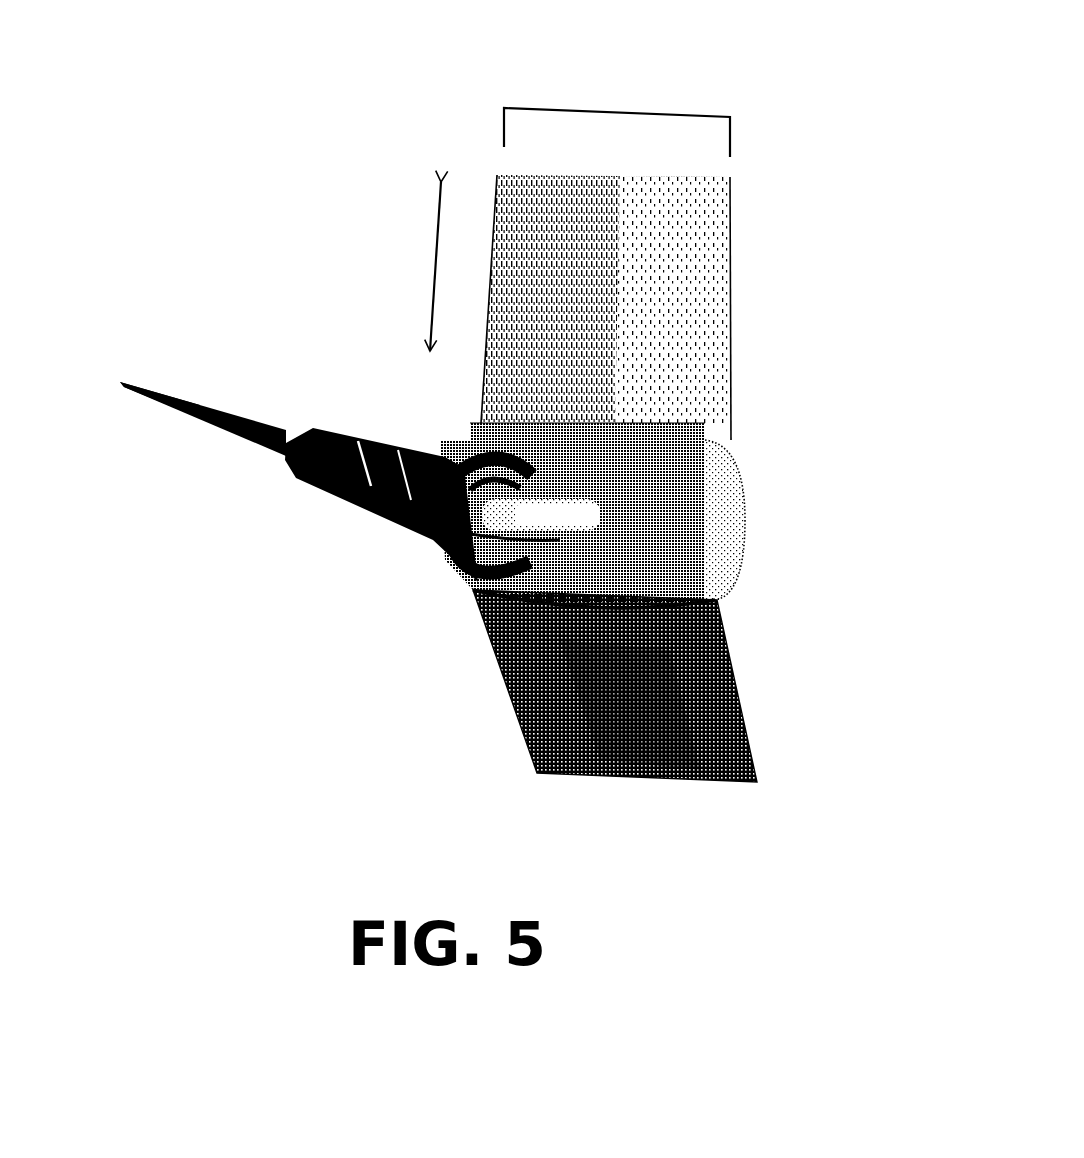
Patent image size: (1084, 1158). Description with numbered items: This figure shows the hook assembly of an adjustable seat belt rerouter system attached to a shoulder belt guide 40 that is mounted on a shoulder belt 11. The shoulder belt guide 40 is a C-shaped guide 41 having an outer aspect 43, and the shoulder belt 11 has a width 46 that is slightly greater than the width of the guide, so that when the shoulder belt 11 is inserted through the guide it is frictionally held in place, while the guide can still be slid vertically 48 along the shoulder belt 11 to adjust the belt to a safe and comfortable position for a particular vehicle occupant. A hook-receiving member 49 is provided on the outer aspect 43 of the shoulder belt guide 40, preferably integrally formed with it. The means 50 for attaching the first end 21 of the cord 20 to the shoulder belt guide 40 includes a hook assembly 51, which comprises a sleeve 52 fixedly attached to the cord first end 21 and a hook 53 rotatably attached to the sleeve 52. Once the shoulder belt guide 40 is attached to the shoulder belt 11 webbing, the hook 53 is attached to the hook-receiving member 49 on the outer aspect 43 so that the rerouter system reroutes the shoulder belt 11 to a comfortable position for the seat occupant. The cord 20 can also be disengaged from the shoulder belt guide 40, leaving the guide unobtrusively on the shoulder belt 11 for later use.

The shoulder belt 11 is at (688, 298).
The cord 20 is at (155, 397).
The first end 21 is at (163, 405).
The shoulder belt guide 40 is at (698, 525).
The C-shaped guide 41 is at (742, 558).
The outer aspect 43 is at (650, 587).
The width 46 is at (610, 112).
The vertical sliding direction 48 is at (435, 260).
The hook-receiving member 49 is at (575, 516).
The means for attaching 50 is at (298, 510).
The hook assembly 51 is at (381, 490).
The sleeve 52 is at (320, 497).
The hook 53 is at (425, 540).